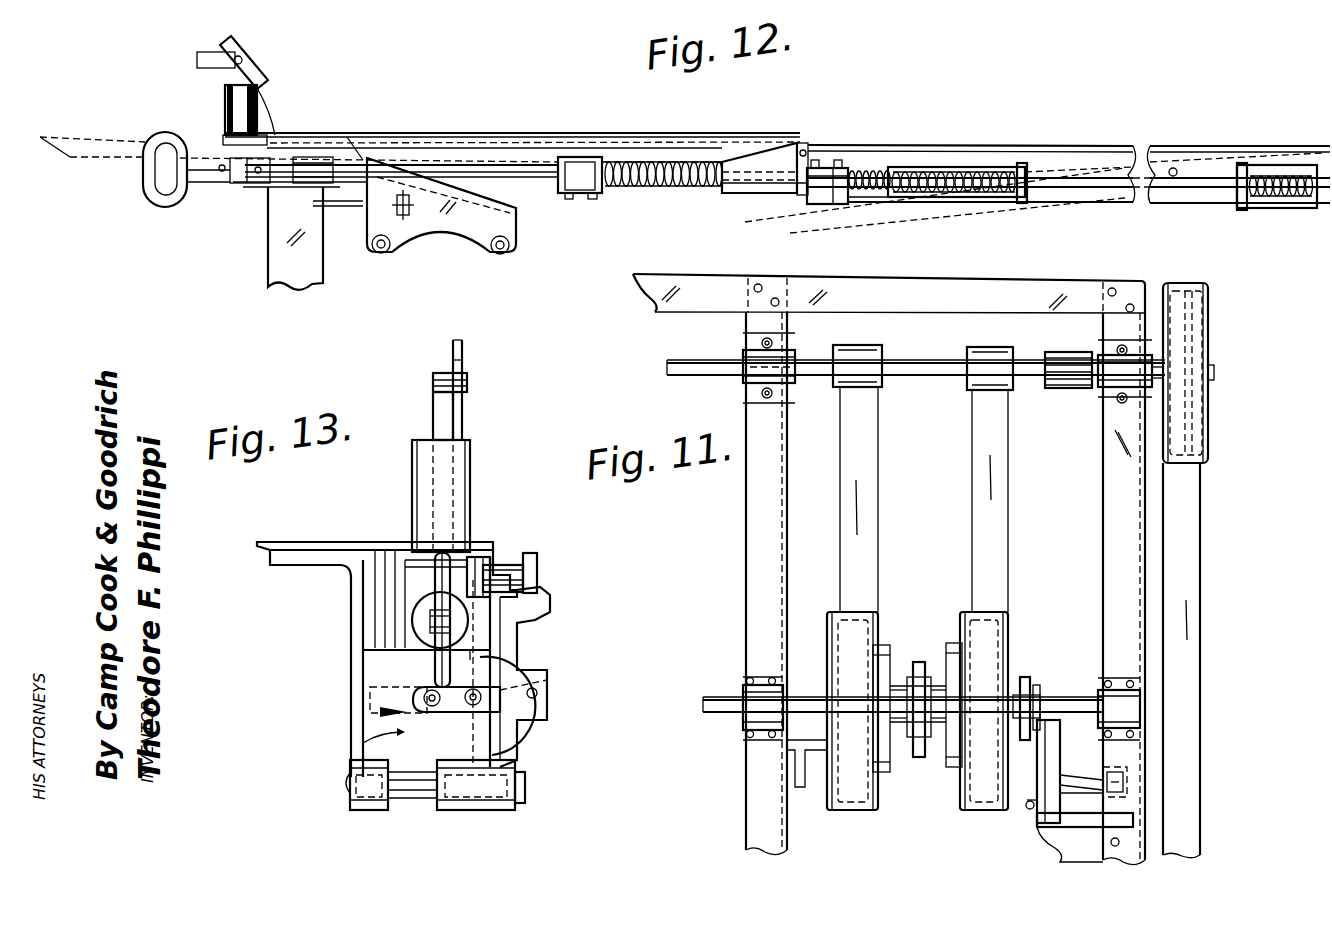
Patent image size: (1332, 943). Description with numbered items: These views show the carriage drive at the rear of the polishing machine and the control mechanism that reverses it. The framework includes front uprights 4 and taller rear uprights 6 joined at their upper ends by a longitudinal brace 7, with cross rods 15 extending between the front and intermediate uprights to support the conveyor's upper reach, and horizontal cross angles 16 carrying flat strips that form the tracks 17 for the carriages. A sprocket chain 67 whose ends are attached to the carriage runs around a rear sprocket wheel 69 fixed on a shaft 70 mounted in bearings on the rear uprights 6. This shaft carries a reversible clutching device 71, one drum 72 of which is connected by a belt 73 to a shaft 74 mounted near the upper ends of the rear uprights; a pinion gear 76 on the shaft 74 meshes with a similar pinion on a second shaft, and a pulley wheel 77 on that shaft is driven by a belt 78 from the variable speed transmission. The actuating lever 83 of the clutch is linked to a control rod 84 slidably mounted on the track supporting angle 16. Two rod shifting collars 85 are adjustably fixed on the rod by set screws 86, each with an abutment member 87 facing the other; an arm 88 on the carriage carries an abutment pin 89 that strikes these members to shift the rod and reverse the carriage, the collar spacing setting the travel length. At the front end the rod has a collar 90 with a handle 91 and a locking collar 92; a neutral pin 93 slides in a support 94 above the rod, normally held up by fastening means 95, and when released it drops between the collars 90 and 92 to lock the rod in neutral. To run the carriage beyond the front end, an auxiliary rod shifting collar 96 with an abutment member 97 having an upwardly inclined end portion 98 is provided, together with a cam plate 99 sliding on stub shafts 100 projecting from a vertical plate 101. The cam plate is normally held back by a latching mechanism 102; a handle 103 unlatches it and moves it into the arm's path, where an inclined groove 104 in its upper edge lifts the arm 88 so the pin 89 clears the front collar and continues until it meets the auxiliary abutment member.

In FIG. 12, the front uprights 4 is at (288, 288).
In FIG. 11, the rear uprights 6 is at (746, 545).
In FIG. 11, the longitudinal brace 7 is at (990, 278).
In FIG. 11, the cross rods 15 is at (915, 378).
In FIG. 12, the cross angles 16 is at (505, 150).
In FIG. 13, the cross angles 16 is at (478, 548).
In FIG. 12, the tracks 17 is at (488, 137).
In FIG. 11, the sprocket chain 67 is at (1027, 677).
In FIG. 11, the rear sprocket wheel 69 is at (1037, 690).
In FIG. 11, the shaft 70 is at (703, 704).
In FIG. 11, the reversible clutching device 71 is at (928, 655).
In FIG. 11, the drum 72 is at (832, 617).
In FIG. 11, the belt 73 is at (870, 527).
In FIG. 11, the shaft 74 is at (667, 365).
In FIG. 11, the pinion gear 76 is at (1068, 352).
In FIG. 11, the pulley wheel 77 is at (1210, 430).
In FIG. 11, the belt 78 is at (1200, 565).
In FIG. 11, the actuating lever 83 is at (1060, 765).
In FIG. 12, the control rod 84 is at (527, 180).
In FIG. 11, the control rod 84 is at (1127, 773).
In FIG. 12, the rod shifting collars 85 is at (828, 206).
In FIG. 12, the set screws 86 is at (840, 160).
In FIG. 12, the abutment member 87 is at (990, 167).
In FIG. 12, the arm 88 is at (100, 140).
In FIG. 13, the arm 88 is at (537, 556).
In FIG. 12, the abutment pin 89 is at (806, 150).
In FIG. 13, the abutment pin 89 is at (505, 565).
In FIG. 12, the collar 90 is at (222, 172).
In FIG. 13, the collar 90 is at (412, 620).
In FIG. 12, the handle 91 is at (168, 205).
In FIG. 13, the handle 91 is at (428, 638).
In FIG. 12, the locking collar 92 is at (258, 175).
In FIG. 12, the neutral pin 93 is at (275, 133).
In FIG. 12, the support 94 is at (257, 110).
In FIG. 13, the support 94 is at (435, 580).
In FIG. 12, the fastening means 95 is at (262, 58).
In FIG. 13, the fastening means 95 is at (462, 410).
In FIG. 12, the auxiliary rod shifting collar 96 is at (578, 199).
In FIG. 12, the abutment member 97 is at (685, 162).
In FIG. 12, the upwardly inclined end portion 98 is at (770, 152).
In FIG. 12, the cam plate 99 is at (472, 228).
In FIG. 13, the cam plate 99 is at (527, 640).
In FIG. 12, the stub shafts 100 is at (378, 254).
In FIG. 13, the stub shafts 100 is at (435, 800).
In FIG. 13, the vertical plate 101 is at (351, 689).
In FIG. 12, the latching mechanism 102 is at (403, 220).
In FIG. 13, the latching mechanism 102 is at (547, 680).
In FIG. 13, the handle 103 is at (428, 690).
In FIG. 12, the inclined groove 104 is at (403, 170).
In FIG. 13, the inclined groove 104 is at (550, 615).